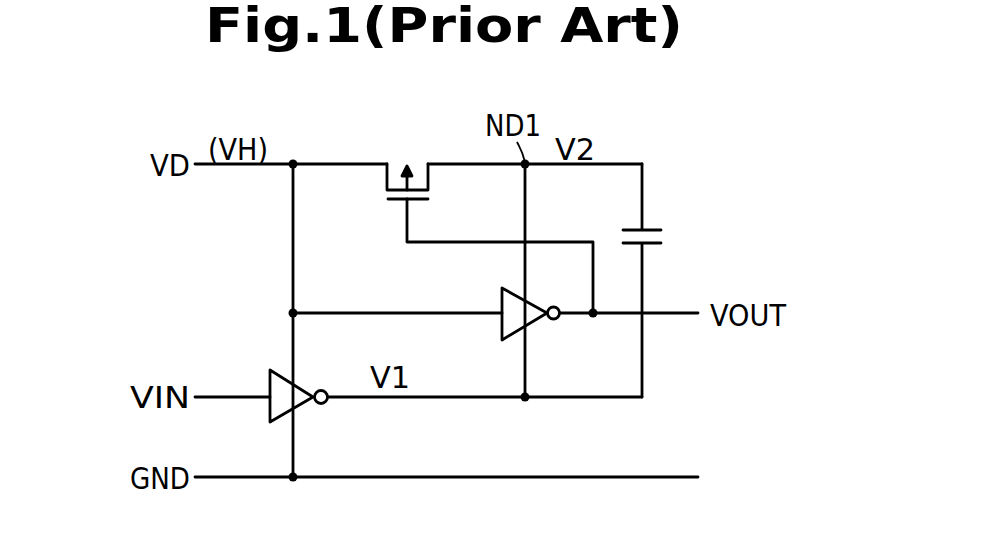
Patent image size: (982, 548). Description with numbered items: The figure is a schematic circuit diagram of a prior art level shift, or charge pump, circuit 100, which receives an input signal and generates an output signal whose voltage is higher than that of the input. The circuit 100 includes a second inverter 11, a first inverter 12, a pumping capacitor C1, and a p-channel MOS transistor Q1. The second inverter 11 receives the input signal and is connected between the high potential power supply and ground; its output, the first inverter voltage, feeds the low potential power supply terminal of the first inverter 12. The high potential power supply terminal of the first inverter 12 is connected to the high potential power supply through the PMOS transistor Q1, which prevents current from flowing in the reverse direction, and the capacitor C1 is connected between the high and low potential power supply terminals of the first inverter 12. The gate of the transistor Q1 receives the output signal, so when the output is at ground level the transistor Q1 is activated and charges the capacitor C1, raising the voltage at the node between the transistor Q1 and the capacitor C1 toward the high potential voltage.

The second inverter 11 is at (269, 385).
The first inverter 12 is at (502, 300).
The charge pump circuit 100 is at (731, 171).
The PMOS transistor Q1 is at (400, 200).
The pumping capacitor C1 is at (650, 230).